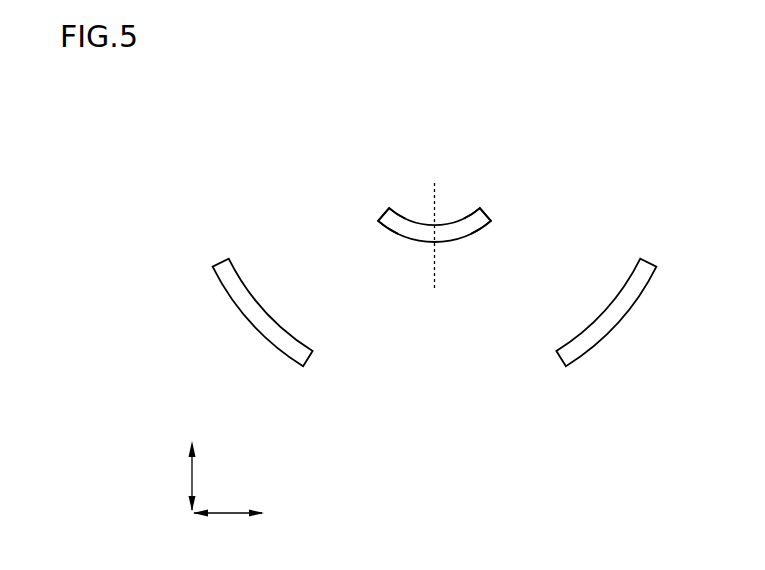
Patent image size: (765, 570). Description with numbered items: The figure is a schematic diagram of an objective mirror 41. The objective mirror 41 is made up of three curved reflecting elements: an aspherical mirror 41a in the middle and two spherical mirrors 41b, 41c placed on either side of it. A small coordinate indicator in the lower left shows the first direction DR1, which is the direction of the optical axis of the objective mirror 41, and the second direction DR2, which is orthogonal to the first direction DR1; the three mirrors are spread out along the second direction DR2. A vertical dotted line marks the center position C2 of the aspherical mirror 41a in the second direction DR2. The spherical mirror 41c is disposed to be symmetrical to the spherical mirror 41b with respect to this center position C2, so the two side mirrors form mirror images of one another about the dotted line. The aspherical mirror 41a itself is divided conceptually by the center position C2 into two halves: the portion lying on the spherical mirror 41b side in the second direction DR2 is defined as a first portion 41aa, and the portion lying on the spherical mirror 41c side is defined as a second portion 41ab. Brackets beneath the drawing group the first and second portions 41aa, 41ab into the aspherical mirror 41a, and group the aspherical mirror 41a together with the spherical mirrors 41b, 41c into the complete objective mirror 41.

The objective mirror 41 is at (434, 324).
The aspherical mirror 41a is at (441, 302).
The first portion 41aa is at (398, 228).
The second portion 41ab is at (471, 228).
The spherical mirror 41b is at (248, 307).
The spherical mirror 41c is at (606, 328).
The center position C2 is at (437, 224).
The first direction DR1 is at (173, 476).
The second direction DR2 is at (228, 528).